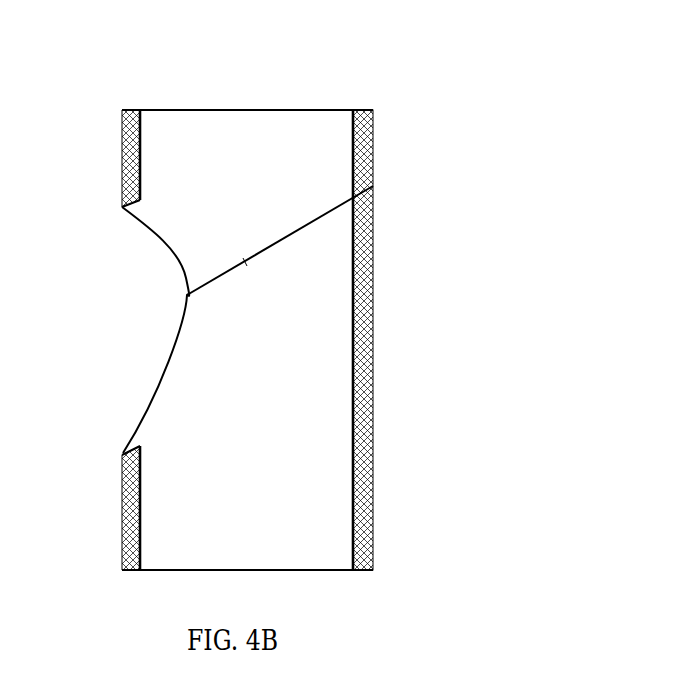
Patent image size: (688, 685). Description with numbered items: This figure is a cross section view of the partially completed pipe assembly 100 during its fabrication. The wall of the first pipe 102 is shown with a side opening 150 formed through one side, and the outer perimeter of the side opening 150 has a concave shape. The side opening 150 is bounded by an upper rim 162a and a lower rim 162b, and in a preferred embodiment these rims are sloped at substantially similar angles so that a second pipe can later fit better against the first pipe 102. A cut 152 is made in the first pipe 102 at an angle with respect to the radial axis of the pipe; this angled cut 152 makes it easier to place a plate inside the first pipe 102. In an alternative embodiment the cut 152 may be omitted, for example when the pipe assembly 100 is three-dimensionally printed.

The pipe assembly 100 is at (412, 87).
The first pipe 102 is at (368, 420).
The side opening 150 is at (117, 208).
The cut 152 is at (310, 230).
The upper rim 162a is at (123, 207).
The lower rim 162b is at (127, 453).